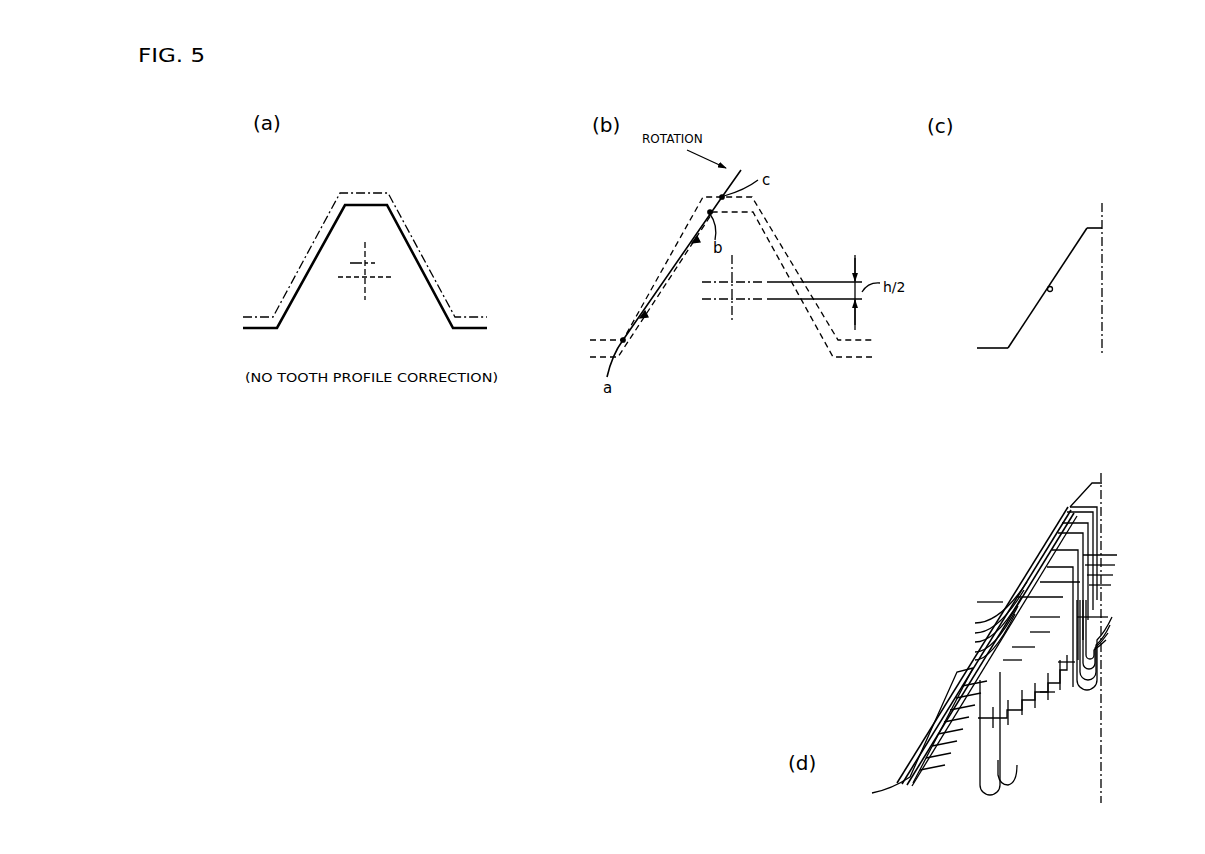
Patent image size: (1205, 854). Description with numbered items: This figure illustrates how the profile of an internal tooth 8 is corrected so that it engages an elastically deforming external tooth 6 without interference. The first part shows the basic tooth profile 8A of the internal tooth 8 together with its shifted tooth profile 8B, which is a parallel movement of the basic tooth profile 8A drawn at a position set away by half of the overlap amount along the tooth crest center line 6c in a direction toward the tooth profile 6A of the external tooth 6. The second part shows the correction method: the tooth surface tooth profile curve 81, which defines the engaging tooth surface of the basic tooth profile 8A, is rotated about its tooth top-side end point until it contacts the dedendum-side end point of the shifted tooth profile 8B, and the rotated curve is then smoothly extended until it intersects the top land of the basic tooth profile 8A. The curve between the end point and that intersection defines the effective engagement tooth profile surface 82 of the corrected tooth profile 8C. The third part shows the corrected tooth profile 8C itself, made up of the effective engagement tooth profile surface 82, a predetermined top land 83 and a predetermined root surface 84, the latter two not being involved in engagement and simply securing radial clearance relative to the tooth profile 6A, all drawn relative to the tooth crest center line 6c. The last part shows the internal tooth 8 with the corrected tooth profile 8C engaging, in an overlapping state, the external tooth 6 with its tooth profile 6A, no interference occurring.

The basic tooth profile 8A is at (392, 224).
The shifted tooth profile 8B is at (400, 262).
The tooth surface tooth profile curve 81 is at (620, 323).
The effective engagement tooth profile surface 82 is at (1048, 287).
The top land 83 is at (988, 350).
The root surface 84 is at (1093, 228).
The corrected tooth profile 8C is at (1069, 271).
The tooth crest center line 6c is at (1102, 327).
The external tooth 6 is at (899, 726).
The tooth profile of external tooth 6A is at (936, 703).
The internal tooth 8 is at (1016, 551).